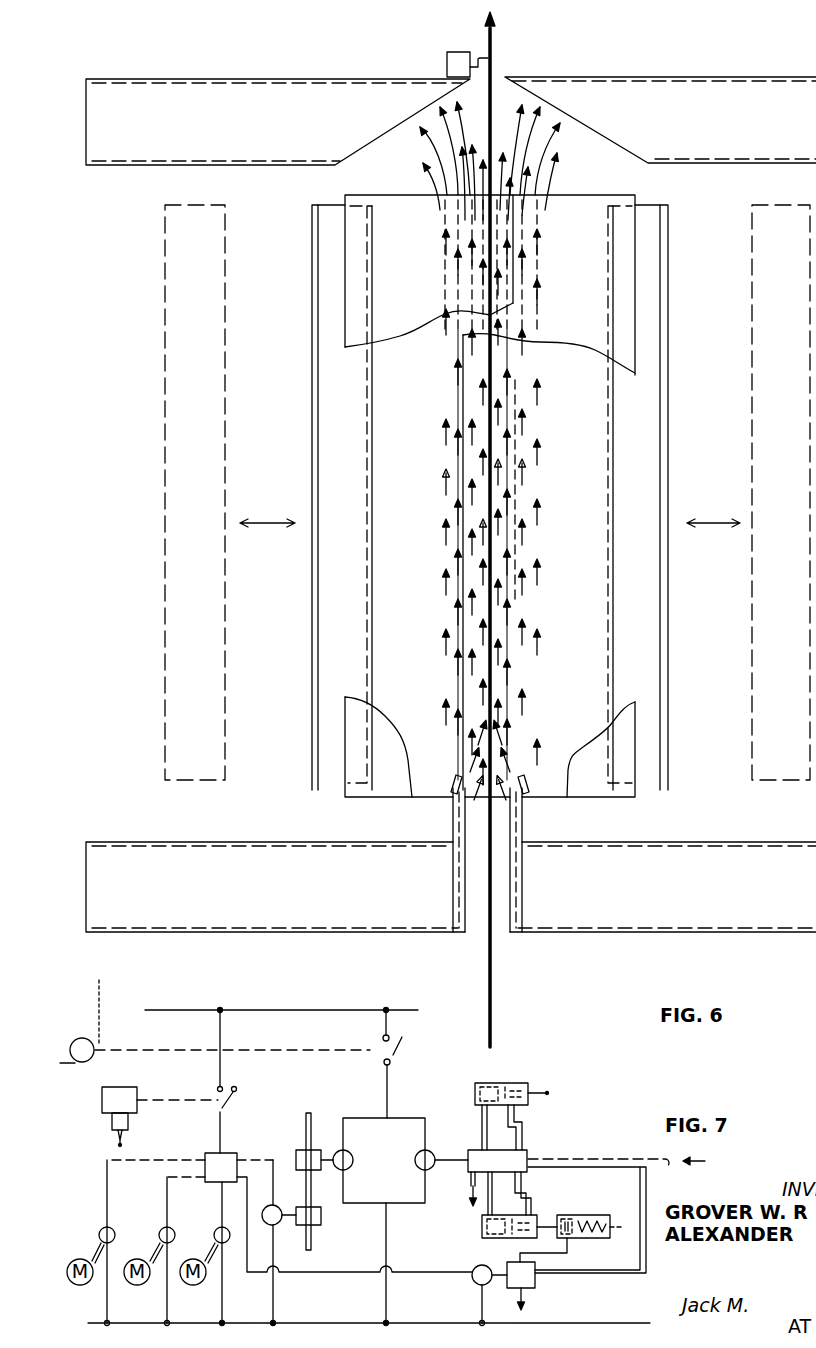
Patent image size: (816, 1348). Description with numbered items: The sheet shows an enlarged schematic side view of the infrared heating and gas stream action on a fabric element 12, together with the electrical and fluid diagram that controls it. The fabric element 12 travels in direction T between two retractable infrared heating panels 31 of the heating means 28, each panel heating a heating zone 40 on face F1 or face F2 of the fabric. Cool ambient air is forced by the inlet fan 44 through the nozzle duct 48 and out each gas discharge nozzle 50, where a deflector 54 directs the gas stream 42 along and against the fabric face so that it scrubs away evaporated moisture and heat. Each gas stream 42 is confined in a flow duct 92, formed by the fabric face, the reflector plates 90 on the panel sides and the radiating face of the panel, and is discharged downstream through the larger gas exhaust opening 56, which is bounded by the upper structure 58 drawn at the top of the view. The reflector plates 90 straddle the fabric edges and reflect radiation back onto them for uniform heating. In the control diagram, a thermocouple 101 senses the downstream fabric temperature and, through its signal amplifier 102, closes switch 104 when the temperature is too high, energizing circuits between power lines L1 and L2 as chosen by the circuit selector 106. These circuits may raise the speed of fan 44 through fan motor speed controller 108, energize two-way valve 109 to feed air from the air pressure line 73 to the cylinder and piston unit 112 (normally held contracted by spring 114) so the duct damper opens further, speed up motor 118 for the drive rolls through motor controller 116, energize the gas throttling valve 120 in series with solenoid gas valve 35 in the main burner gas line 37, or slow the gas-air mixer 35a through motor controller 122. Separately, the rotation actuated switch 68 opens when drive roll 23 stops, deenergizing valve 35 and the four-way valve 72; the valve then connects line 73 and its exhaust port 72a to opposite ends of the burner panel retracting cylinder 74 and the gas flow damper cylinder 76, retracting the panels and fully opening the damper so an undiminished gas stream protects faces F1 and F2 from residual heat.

In FIG. 6, the fabric element 12 is at (492, 983).
In FIG. 7, the fabric element 12 is at (97, 1005).
In FIG. 7, the drive roll 23 is at (100, 1050).
In FIG. 6, the heating means 28 is at (318, 400).
In FIG. 6, the infrared heating panel 31 is at (752, 400).
In FIG. 7, the solenoid gas valve 35 is at (342, 1152).
In FIG. 7, the gas-air mixer 35a is at (75, 1258).
In FIG. 7, the main burner gas line 37 is at (311, 1246).
In FIG. 6, the heating zone 40 is at (492, 420).
In FIG. 6, the gas stream 42 is at (510, 540).
In FIG. 7, the inlet fan 44 is at (193, 1285).
In FIG. 6, the nozzle duct 48 is at (371, 924).
In FIG. 6, the gas discharge nozzle 50 is at (528, 812).
In FIG. 6, the gas stream deflector 54 is at (455, 777).
In FIG. 6, the gas exhaust opening 56 is at (410, 128).
In FIG. 6, the upper block 58 is at (327, 86).
In FIG. 7, the rotation actuated switch 68 is at (390, 1058).
In FIG. 7, the solenoid operated four-way valve 72 is at (462, 1147).
In FIG. 7, the exhaust port 72a is at (466, 1183).
In FIG. 7, the air pressure line 73 is at (614, 1160).
In FIG. 7, the burner panel retracting cylinder 74 is at (476, 1095).
In FIG. 7, the gas flow damper cylinder 76 is at (480, 1235).
In FIG. 6, the reflector plate 90 is at (397, 335).
In FIG. 6, the flow duct 92 is at (455, 470).
In FIG. 6, the thermocouple 101 is at (481, 60).
In FIG. 7, the thermocouple 101 is at (125, 1137).
In FIG. 6, the thermocouple signal amplifier 102 is at (452, 60).
In FIG. 7, the thermocouple signal amplifier 102 is at (130, 1090).
In FIG. 7, the switch 104 is at (228, 1092).
In FIG. 7, the circuit selector 106 is at (245, 1145).
In FIG. 7, the fan motor speed controller 108 is at (214, 1230).
In FIG. 7, the solenoid actuated two-way valve 109 is at (478, 1268).
In FIG. 7, the cylinder and piston unit 112 is at (565, 1215).
In FIG. 7, the spring 114 is at (590, 1214).
In FIG. 7, the motor controller 116 is at (165, 1227).
In FIG. 7, the motor 118 is at (136, 1285).
In FIG. 7, the solenoid gas throttling valve 120 is at (266, 1232).
In FIG. 7, the motor controller 122 is at (110, 1230).
In FIG. 6, the face F1 is at (488, 963).
In FIG. 6, the face F2 is at (492, 968).
In FIG. 6, the direction of movement T is at (488, 1006).
In FIG. 7, the direction of movement T is at (108, 993).
In FIG. 7, the power line L1 is at (280, 1010).
In FIG. 7, the power line L2 is at (355, 1320).